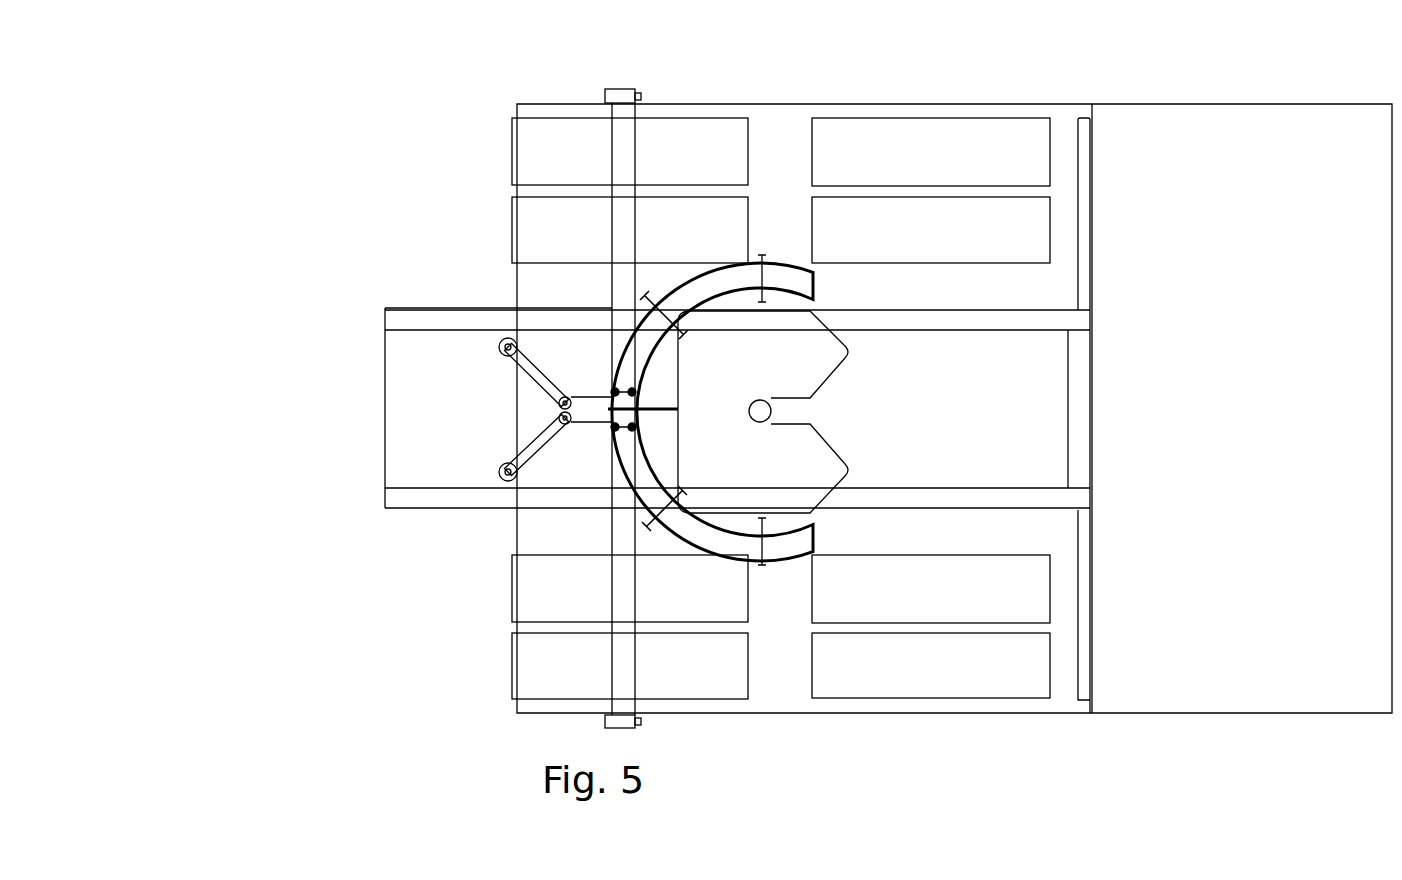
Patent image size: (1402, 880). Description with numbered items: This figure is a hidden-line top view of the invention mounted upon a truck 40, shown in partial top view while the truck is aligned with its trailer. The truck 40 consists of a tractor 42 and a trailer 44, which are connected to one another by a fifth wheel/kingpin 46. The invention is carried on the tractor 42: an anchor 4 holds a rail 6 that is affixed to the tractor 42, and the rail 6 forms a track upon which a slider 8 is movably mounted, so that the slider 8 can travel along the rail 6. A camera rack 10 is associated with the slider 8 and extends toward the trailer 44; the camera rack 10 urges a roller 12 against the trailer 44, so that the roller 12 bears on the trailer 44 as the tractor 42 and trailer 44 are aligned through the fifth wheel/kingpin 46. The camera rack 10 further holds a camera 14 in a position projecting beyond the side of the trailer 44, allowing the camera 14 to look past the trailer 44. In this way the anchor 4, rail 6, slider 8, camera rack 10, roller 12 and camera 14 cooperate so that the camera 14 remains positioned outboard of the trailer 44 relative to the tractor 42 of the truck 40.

The anchor 4 is at (660, 412).
The rail 6 is at (670, 512).
The slider 8 is at (615, 392).
The camera rack 10 is at (612, 239).
The roller 12 is at (505, 468).
The camera 14 is at (620, 88).
The truck 40 is at (325, 210).
The tractor 42 is at (376, 426).
The trailer 44 is at (1300, 294).
The fifth wheel/kingpin 46 is at (845, 478).